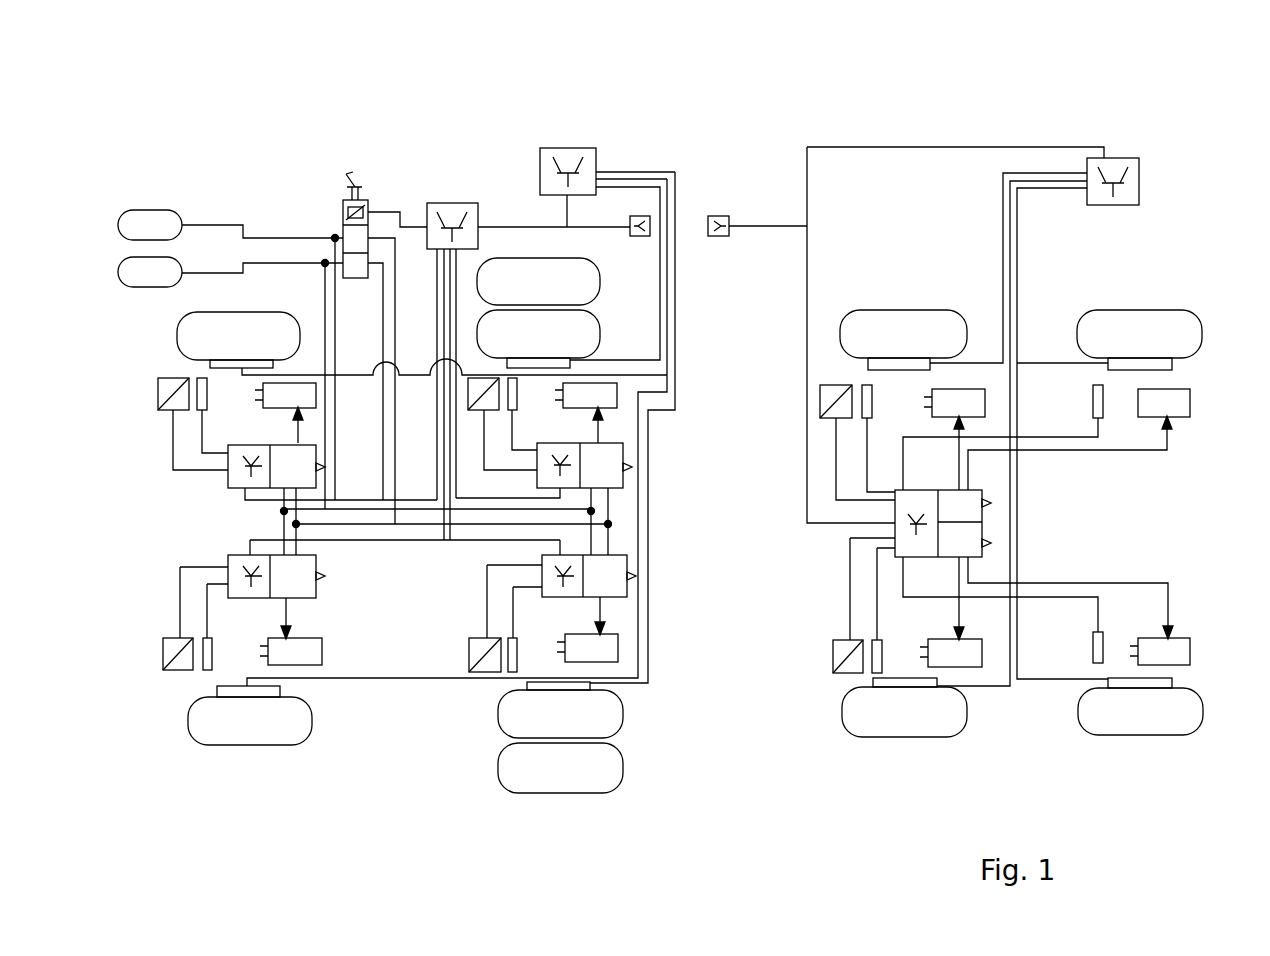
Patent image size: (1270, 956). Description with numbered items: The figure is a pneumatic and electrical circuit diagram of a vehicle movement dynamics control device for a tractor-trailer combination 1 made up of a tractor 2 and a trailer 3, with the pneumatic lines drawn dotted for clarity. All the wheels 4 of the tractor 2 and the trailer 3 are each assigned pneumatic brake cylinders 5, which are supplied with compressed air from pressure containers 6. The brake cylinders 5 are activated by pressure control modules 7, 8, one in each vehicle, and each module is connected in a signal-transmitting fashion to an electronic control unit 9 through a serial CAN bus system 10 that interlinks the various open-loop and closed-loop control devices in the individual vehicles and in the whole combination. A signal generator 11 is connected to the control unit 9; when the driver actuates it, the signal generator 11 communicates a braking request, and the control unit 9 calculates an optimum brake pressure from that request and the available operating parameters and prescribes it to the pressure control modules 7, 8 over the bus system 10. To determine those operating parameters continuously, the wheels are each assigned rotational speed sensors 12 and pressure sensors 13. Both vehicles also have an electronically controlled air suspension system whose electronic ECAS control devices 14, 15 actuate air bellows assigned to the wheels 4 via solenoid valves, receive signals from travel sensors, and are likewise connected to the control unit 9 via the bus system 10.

The tractor-trailer combination 1 is at (250, 140).
The tractor 2 is at (390, 750).
The trailer 3 is at (820, 748).
The wheels 4 is at (228, 730).
The pneumatic brake cylinders 5 is at (593, 653).
The pressure containers 6 is at (158, 222).
The pressure control module 7 is at (275, 478).
The pressure control module 8 is at (966, 541).
The electronic control unit 9 is at (467, 219).
The serial bus system 10 is at (758, 237).
The signal generator 11 is at (345, 232).
The rotational speed sensors 12 is at (205, 642).
The pressure sensors 13 is at (165, 650).
The electronic ECAS control device 14 is at (574, 170).
The electronic ECAS control device 15 is at (578, 686).